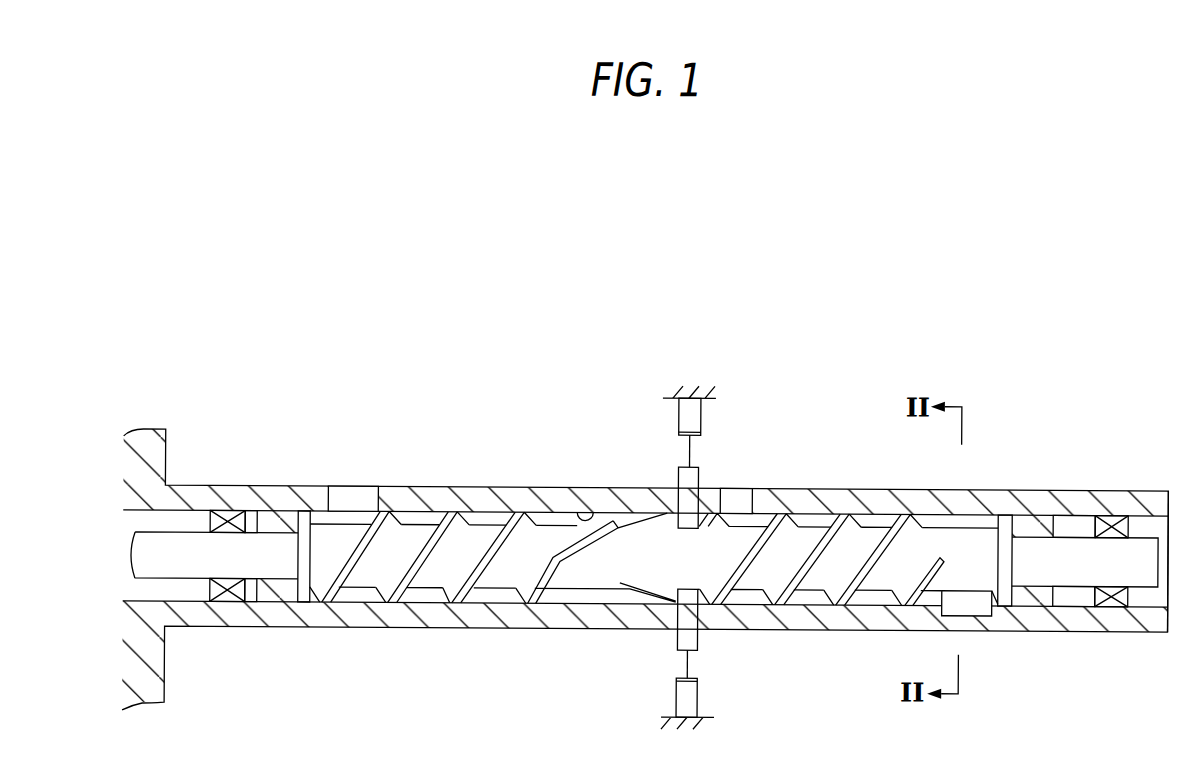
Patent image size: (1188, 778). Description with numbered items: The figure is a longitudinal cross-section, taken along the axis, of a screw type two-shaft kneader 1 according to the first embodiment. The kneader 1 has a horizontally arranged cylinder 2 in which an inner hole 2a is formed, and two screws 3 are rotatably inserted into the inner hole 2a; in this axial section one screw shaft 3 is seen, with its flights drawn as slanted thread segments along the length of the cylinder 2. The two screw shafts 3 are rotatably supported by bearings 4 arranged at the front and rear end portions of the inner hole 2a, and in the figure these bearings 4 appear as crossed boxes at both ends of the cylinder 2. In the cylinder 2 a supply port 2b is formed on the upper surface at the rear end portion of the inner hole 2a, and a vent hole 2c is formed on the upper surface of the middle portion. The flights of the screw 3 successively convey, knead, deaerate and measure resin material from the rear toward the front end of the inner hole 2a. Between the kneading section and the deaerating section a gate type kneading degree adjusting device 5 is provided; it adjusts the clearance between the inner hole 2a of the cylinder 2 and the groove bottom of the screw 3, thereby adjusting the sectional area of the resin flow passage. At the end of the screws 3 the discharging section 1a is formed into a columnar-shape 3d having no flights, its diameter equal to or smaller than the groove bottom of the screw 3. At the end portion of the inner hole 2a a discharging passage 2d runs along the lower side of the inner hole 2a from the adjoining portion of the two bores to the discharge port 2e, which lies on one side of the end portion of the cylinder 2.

The screw type two-shaft kneader 1 is at (451, 466).
The discharging section 1a is at (979, 466).
The cylinder 2 is at (644, 562).
The inner hole 2a is at (586, 512).
The supply port 2b is at (357, 505).
The vent hole 2c is at (728, 495).
The discharging passage 2d is at (973, 608).
The discharge port 2e is at (1011, 647).
The screw 3 is at (815, 526).
The columnar-shape 3d is at (988, 528).
The bearing 4 is at (228, 515).
The gate type kneading degree adjusting device 5 is at (715, 448).